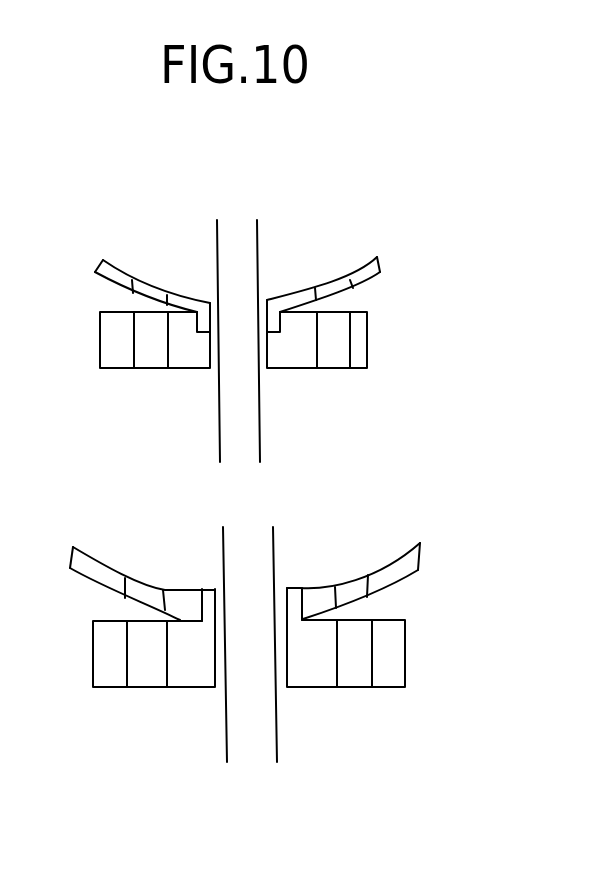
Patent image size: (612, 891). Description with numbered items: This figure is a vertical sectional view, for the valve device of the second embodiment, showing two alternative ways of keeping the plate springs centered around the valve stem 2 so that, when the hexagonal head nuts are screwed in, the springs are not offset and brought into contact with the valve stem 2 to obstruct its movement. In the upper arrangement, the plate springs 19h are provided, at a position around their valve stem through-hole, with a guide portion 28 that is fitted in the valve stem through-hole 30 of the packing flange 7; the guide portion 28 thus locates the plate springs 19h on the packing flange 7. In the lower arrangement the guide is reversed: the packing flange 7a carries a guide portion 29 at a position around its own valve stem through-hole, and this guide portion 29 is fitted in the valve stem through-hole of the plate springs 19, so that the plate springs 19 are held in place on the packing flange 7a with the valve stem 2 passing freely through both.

The valve stem 2 is at (257, 240).
The guide portion 28 is at (266, 323).
The plate springs 19h is at (357, 262).
The packing flange 7 is at (367, 338).
The valve stem through-hole 30 is at (210, 348).
The guide portion 29 is at (283, 605).
The plate springs 19 is at (390, 558).
The packing flange 7a is at (405, 652).